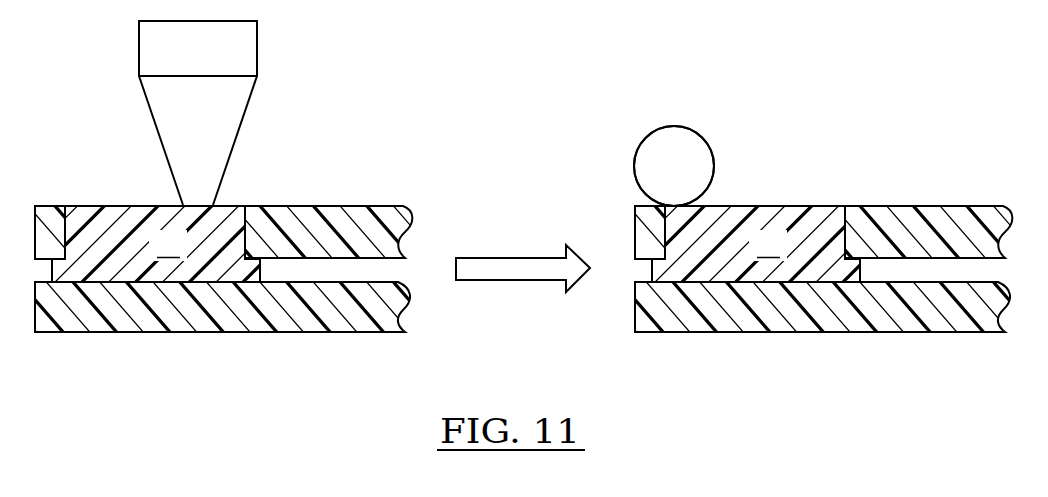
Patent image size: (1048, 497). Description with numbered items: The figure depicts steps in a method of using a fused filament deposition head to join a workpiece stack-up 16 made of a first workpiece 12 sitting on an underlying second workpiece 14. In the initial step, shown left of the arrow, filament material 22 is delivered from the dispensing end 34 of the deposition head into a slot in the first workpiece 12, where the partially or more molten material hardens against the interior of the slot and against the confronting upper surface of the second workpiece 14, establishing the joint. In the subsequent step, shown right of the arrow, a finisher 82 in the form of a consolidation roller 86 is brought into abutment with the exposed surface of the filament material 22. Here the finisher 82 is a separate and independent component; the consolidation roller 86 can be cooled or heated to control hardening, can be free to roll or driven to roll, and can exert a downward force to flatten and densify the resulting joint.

The first workpiece 12 is at (357, 205).
The second workpiece 14 is at (372, 333).
The workpiece stack-up 16 is at (57, 333).
The filament material 22 is at (460, 244).
The dispensing end 34 is at (218, 203).
The finisher 82 is at (716, 163).
The consolidation roller 86 is at (673, 152).